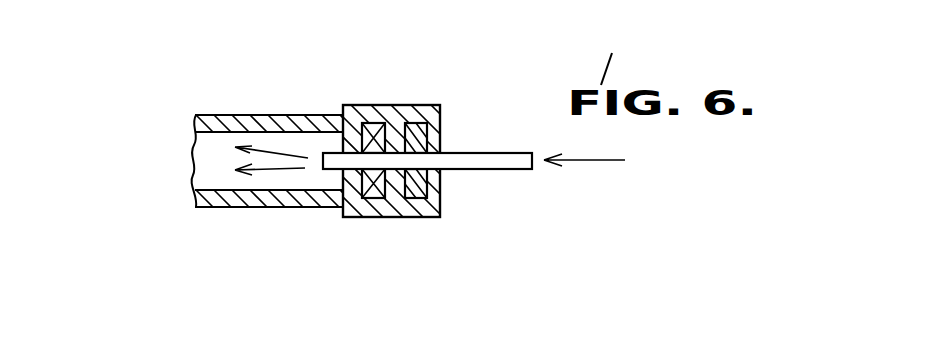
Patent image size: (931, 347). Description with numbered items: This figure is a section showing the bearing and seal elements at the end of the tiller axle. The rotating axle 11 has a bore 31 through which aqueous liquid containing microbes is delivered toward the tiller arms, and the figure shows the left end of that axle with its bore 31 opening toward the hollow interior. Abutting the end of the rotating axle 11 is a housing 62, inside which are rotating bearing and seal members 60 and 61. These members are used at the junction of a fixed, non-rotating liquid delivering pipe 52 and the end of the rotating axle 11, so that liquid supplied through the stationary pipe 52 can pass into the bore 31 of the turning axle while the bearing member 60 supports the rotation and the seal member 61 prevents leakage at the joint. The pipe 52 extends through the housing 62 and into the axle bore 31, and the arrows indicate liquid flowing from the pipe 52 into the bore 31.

The rotating axle 11 is at (230, 207).
The bore 31 is at (193, 137).
The fixed non-rotating liquid delivering pipe 52 is at (503, 163).
The rotating bearing member 60 is at (369, 105).
The rotating seal member 61 is at (420, 105).
The housing 62 is at (393, 207).